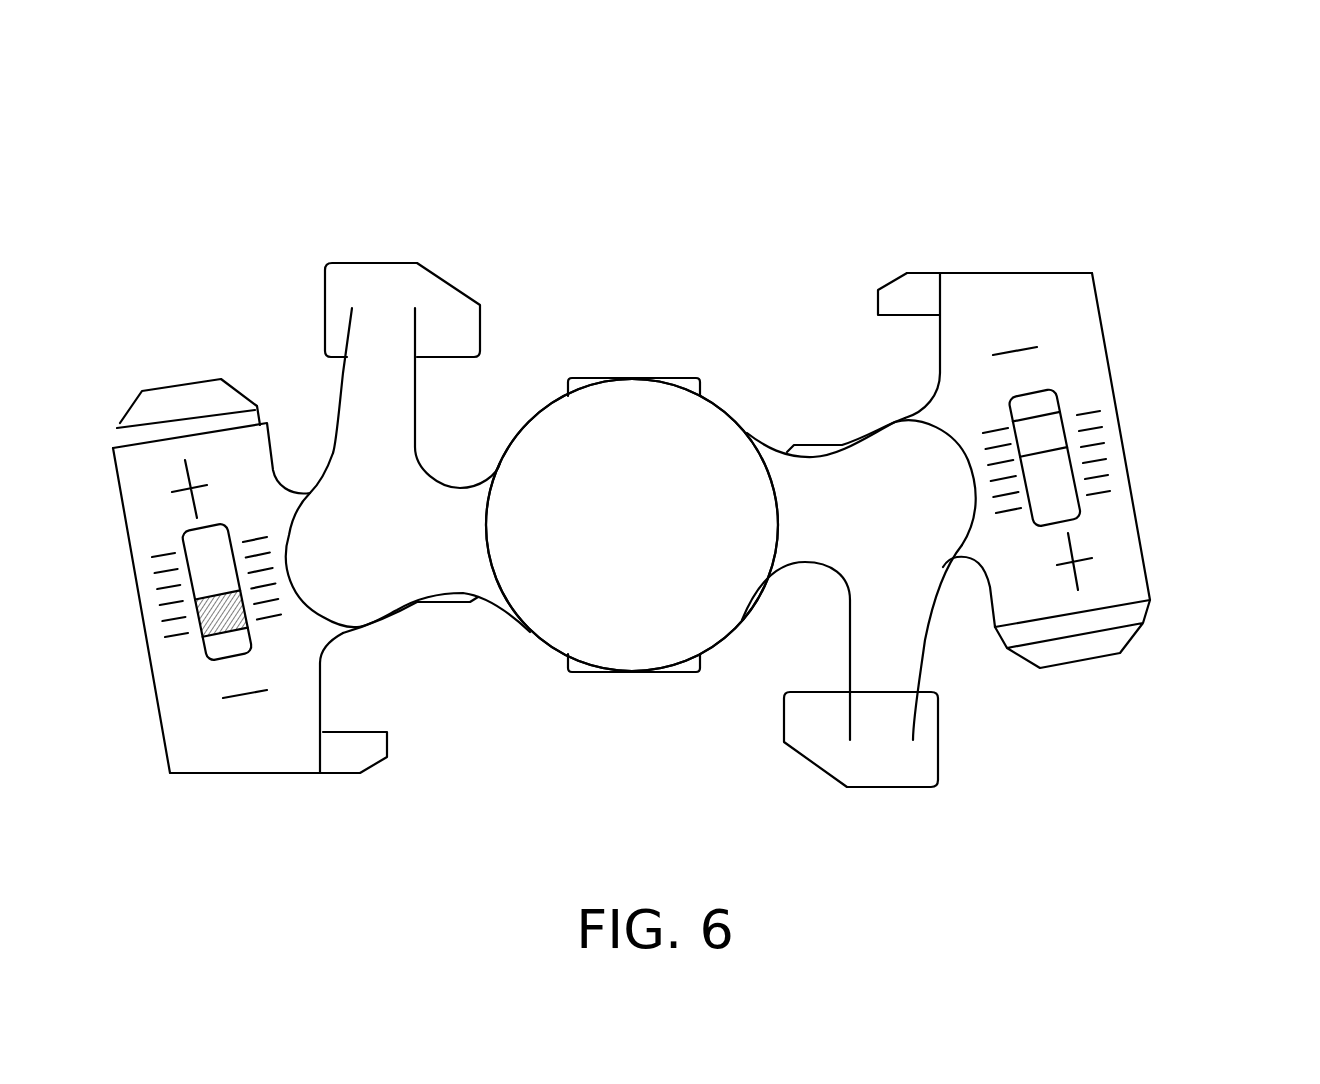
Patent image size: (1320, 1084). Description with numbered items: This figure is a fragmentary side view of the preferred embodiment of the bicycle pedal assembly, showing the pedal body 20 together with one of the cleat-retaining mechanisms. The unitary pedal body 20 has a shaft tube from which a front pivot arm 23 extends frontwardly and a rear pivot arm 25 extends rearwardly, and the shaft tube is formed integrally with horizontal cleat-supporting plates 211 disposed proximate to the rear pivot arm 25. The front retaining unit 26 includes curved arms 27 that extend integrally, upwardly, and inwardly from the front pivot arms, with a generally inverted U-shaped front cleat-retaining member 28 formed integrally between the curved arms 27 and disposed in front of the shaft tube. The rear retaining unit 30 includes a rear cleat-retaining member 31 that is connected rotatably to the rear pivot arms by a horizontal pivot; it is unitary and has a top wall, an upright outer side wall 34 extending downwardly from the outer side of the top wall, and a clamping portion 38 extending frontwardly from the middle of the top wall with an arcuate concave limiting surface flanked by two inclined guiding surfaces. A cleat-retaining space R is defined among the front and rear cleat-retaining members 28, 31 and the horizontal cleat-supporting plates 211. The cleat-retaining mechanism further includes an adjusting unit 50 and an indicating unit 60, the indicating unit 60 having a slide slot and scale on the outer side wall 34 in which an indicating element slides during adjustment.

The pedal body 20 is at (734, 391).
The horizontal cleat-supporting plates 211 is at (582, 373).
The cleat-retaining space R is at (605, 348).
The front pivot arm 23 is at (448, 577).
The rear pivot arm 25 is at (797, 543).
The front retaining unit 26 is at (306, 435).
The curved arms 27 is at (363, 400).
The front cleat-retaining member 28 is at (423, 283).
The rear retaining unit 30 is at (1036, 477).
The rear cleat-retaining member 31 is at (985, 260).
The outer side wall 34 is at (1100, 368).
The clamping portion 38 is at (913, 264).
The adjusting unit 50 is at (1078, 678).
The indicating unit 60 is at (1092, 515).